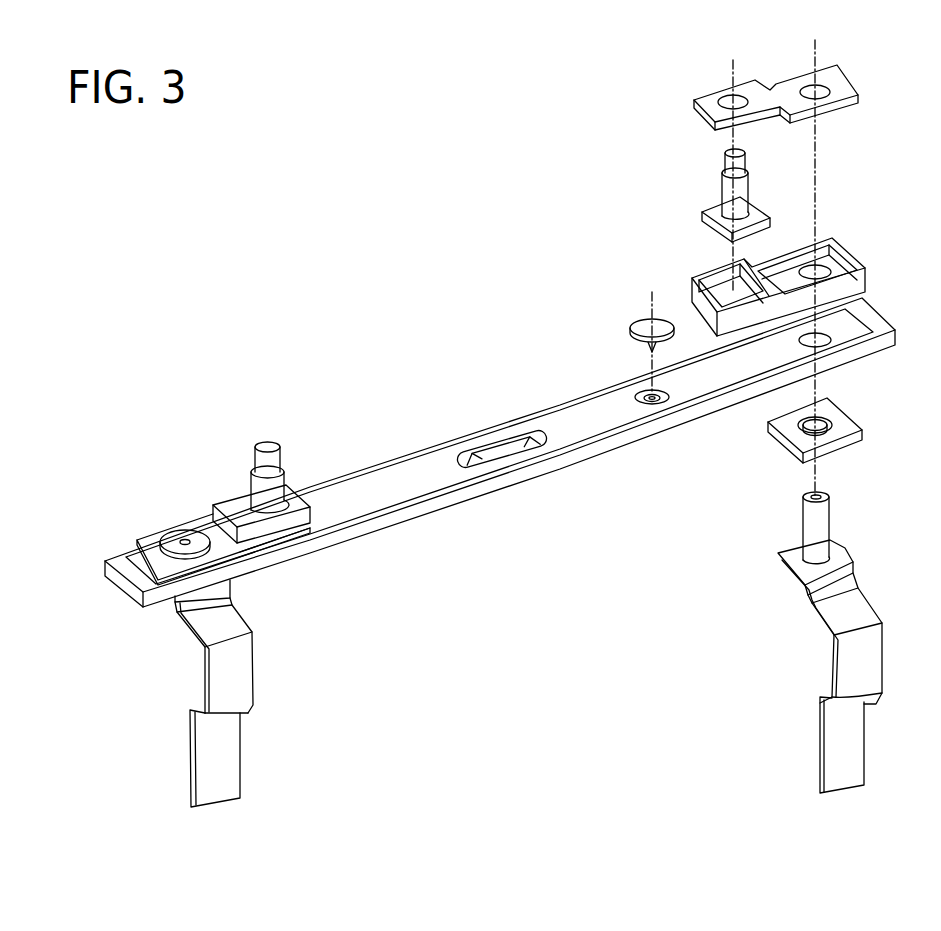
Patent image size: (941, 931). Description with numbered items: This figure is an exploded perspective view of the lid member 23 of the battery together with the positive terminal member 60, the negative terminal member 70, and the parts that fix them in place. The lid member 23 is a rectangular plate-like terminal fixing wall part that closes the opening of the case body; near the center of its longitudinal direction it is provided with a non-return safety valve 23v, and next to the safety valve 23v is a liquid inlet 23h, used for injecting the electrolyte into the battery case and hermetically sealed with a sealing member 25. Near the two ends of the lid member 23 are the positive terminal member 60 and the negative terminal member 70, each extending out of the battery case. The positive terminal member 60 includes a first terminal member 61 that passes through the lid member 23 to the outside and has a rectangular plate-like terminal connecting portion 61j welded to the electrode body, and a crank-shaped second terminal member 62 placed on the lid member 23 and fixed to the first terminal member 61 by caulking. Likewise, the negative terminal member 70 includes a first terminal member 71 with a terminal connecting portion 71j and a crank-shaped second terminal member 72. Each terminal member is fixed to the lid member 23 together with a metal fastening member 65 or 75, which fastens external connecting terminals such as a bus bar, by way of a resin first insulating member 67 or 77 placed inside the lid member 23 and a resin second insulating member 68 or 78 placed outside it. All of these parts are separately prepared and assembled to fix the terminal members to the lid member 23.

The lid member 23 is at (385, 490).
The safety valve 23v is at (497, 445).
The liquid inlet 23h is at (645, 388).
The sealing member 25 is at (640, 322).
The positive terminal member 60 is at (245, 500).
The first terminal member 61 is at (228, 735).
The terminal connecting portion 61j is at (230, 772).
The second terminal member 62 is at (228, 500).
The fastening member 65 is at (283, 457).
The first insulating member 67 is at (230, 593).
The second insulating member 68 is at (287, 533).
The negative terminal member 70 is at (702, 98).
The first terminal member 71 is at (782, 557).
The terminal connecting portion 71j is at (840, 752).
The second terminal member 72 is at (850, 94).
The fastening member 75 is at (727, 195).
The first insulating member 77 is at (783, 442).
The second insulating member 78 is at (698, 266).